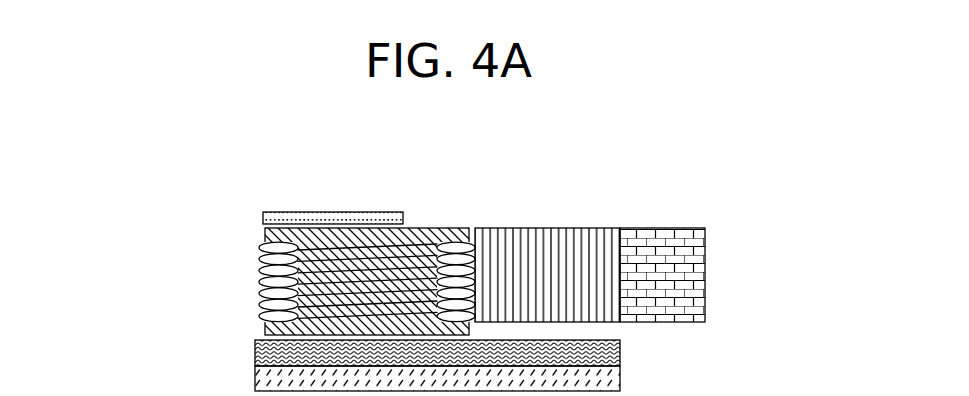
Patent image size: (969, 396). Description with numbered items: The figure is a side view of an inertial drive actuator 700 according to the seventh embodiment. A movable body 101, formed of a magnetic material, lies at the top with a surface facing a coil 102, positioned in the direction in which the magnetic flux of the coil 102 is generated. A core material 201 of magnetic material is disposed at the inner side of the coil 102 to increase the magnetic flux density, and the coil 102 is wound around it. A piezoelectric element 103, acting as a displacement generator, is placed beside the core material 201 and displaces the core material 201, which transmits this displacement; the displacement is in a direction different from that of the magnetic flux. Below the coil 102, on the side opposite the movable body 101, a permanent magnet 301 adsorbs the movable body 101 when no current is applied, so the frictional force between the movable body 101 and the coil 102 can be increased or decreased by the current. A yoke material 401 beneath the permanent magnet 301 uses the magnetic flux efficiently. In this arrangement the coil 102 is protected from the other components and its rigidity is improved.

The inertial drive actuator 700 is at (737, 140).
The movable body 101 is at (308, 211).
The coil 102 is at (259, 266).
The piezoelectric element 103 is at (553, 244).
The core material 201 is at (422, 236).
The permanent magnet 301 is at (256, 350).
The yoke material 401 is at (257, 375).